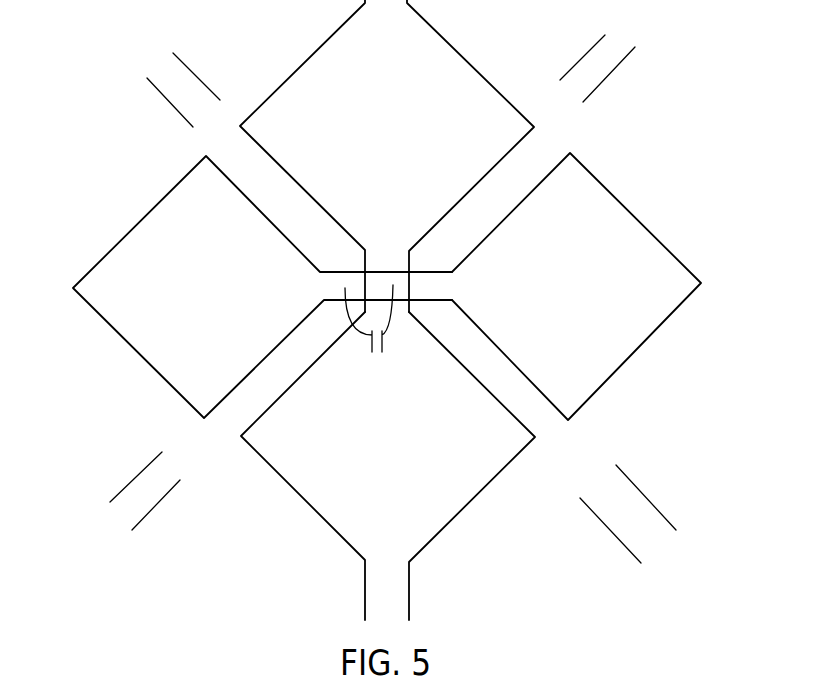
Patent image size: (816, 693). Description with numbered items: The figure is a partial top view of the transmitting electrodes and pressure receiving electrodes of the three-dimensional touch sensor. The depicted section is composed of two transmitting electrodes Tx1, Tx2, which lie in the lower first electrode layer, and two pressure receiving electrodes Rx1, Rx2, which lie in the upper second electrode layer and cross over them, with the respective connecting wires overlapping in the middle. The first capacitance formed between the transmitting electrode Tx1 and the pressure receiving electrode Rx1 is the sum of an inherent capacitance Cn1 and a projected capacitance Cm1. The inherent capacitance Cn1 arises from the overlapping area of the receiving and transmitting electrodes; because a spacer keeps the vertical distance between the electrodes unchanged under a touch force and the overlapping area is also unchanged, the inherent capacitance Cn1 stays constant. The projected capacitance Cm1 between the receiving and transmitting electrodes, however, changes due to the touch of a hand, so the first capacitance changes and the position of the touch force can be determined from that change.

The pressure receiving electrode Rx1 is at (387, 156).
The pressure receiving electrode Rx2 is at (388, 466).
The transmitting electrode Tx1 is at (262, 287).
The transmitting electrode Tx2 is at (576, 286).
The projected capacitance Cm1 is at (215, 227).
The inherent capacitance Cn1 is at (381, 340).